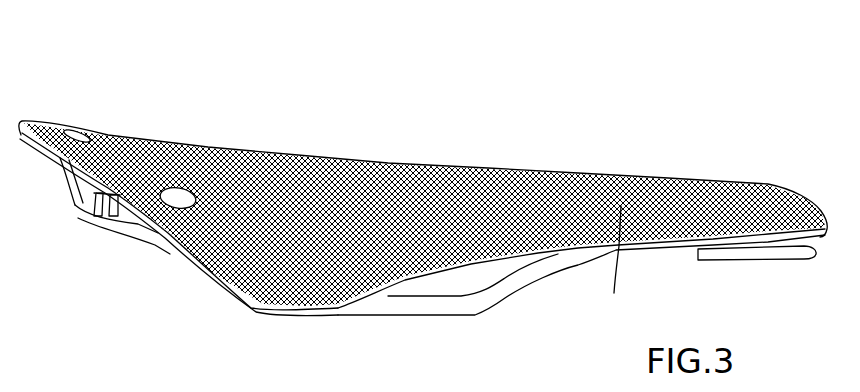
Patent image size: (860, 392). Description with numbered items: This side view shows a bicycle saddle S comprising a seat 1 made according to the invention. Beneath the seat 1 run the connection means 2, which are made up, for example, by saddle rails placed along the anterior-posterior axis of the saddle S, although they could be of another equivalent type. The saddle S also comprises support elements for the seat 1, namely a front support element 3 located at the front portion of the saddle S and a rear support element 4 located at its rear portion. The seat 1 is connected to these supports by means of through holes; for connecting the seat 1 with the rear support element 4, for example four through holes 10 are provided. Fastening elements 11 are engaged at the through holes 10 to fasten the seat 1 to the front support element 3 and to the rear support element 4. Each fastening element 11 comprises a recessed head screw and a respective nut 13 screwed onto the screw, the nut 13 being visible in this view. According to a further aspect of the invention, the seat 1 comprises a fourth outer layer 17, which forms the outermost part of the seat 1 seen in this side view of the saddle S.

The seat 1 is at (380, 156).
The connection means 2 is at (437, 307).
The front support element 3 is at (783, 248).
The rear support element 4 is at (70, 210).
The through holes 10 is at (166, 255).
The fastening elements 11 is at (68, 121).
The nut 13 is at (76, 125).
The fourth outer layer 17 is at (652, 172).
The bicycle saddle S is at (498, 150).